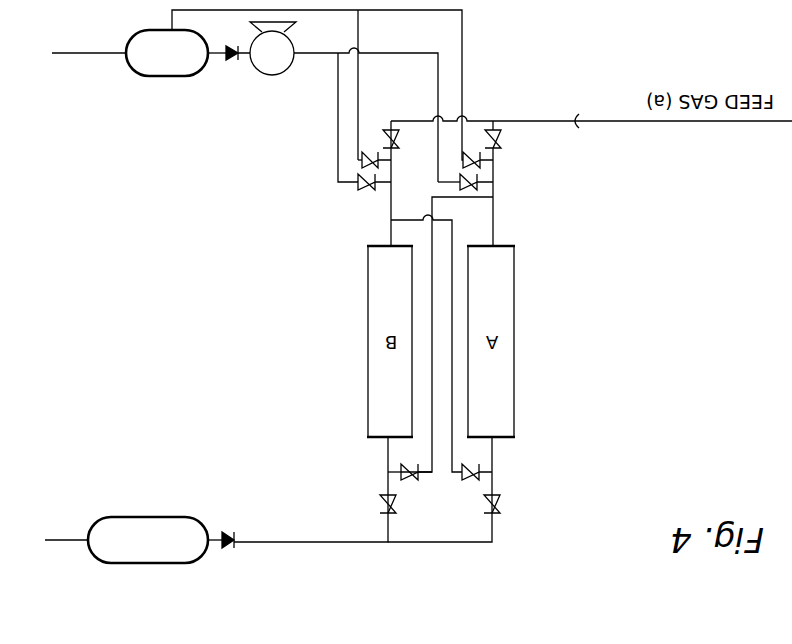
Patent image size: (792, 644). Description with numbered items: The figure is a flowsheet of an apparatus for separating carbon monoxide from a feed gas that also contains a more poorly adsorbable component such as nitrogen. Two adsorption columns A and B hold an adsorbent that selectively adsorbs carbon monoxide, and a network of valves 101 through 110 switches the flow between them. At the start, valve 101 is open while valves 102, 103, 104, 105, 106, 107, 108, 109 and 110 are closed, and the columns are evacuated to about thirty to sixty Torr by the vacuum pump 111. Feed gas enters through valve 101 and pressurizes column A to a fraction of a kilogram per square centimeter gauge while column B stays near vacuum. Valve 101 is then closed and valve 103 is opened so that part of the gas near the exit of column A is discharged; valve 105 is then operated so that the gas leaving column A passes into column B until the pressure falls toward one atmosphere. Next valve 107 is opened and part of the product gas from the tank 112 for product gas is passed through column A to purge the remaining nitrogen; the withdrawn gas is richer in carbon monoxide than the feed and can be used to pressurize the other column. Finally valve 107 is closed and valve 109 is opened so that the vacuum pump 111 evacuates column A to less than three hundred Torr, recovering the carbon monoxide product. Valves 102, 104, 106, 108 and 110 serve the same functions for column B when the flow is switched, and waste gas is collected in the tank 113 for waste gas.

The valve 101 is at (503, 140).
The valve 102 is at (401, 142).
The valve 103 is at (500, 505).
The valve 104 is at (380, 504).
The valve 105 is at (463, 480).
The valve 106 is at (409, 476).
The valve 107 is at (470, 150).
The valve 108 is at (370, 150).
The valve 109 is at (495, 181).
The valve 110 is at (364, 191).
The vacuum pump 111 is at (272, 68).
The tank for product gas 112 is at (165, 66).
The tank for waste gas 113 is at (150, 548).